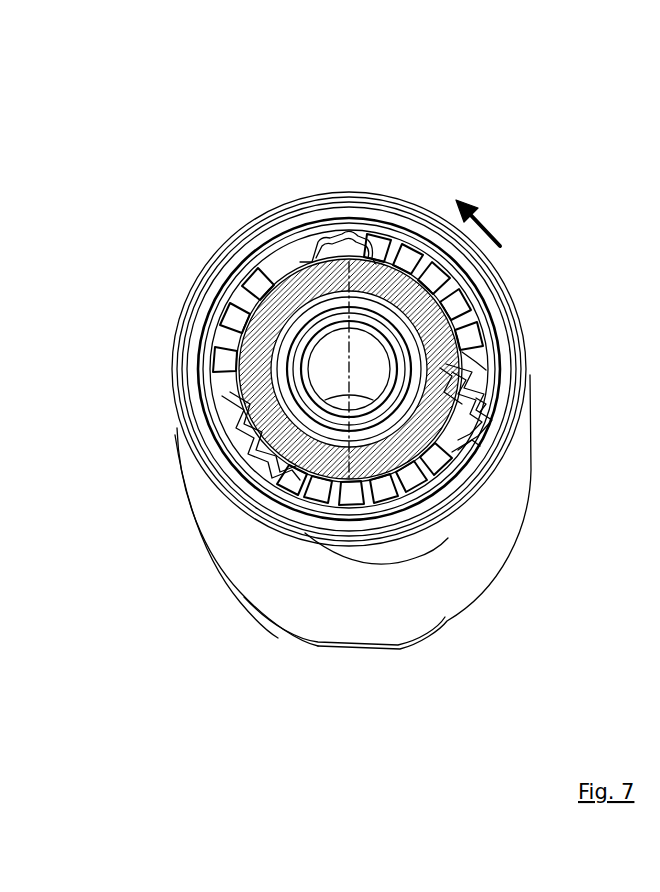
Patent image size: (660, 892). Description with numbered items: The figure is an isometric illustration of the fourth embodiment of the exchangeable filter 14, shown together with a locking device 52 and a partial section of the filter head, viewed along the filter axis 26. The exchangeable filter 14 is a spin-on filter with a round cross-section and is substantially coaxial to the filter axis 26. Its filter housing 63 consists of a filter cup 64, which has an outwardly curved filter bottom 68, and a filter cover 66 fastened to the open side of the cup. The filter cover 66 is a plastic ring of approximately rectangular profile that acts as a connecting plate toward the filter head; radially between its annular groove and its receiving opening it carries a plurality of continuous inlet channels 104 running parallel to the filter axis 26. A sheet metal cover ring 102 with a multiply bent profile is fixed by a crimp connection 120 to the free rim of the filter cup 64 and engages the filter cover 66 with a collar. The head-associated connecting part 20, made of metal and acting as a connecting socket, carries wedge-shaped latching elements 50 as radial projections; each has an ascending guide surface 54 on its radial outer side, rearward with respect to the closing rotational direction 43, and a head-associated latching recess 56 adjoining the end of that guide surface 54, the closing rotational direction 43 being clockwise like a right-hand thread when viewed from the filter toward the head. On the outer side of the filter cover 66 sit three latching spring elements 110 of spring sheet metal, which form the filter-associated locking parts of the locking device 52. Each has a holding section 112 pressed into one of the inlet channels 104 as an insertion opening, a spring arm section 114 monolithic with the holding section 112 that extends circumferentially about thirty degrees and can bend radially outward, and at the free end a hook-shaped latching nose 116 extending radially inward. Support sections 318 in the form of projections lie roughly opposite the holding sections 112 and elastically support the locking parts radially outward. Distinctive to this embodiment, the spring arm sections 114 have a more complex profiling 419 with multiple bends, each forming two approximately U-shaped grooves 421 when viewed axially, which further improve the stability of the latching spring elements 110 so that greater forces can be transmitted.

The exchangeable filter 14 is at (138, 138).
The head-associated connecting part 20 is at (213, 330).
The filter axis 26 is at (349, 275).
The closing rotational direction 43 is at (490, 223).
The head-associated latching element 50 is at (310, 250).
The locking device 52 is at (197, 537).
The guide surface 54 is at (320, 257).
The head-associated latching recess 56 is at (249, 290).
The filter housing 63 is at (303, 607).
The filter cup 64 is at (223, 567).
The filter cover 66 is at (222, 383).
The filter bottom 68 is at (435, 628).
The sheet metal cover ring 102 is at (185, 284).
The inlet channel 104 is at (258, 280).
The latching spring element 110 is at (474, 422).
The holding section 112 is at (440, 453).
The spring arm section 114 is at (476, 384).
The latching nose 116 is at (490, 360).
The crimp connection 120 is at (178, 316).
The support section 318 is at (474, 450).
The profiling 419 is at (483, 404).
The U-shaped groove 421 is at (262, 447).